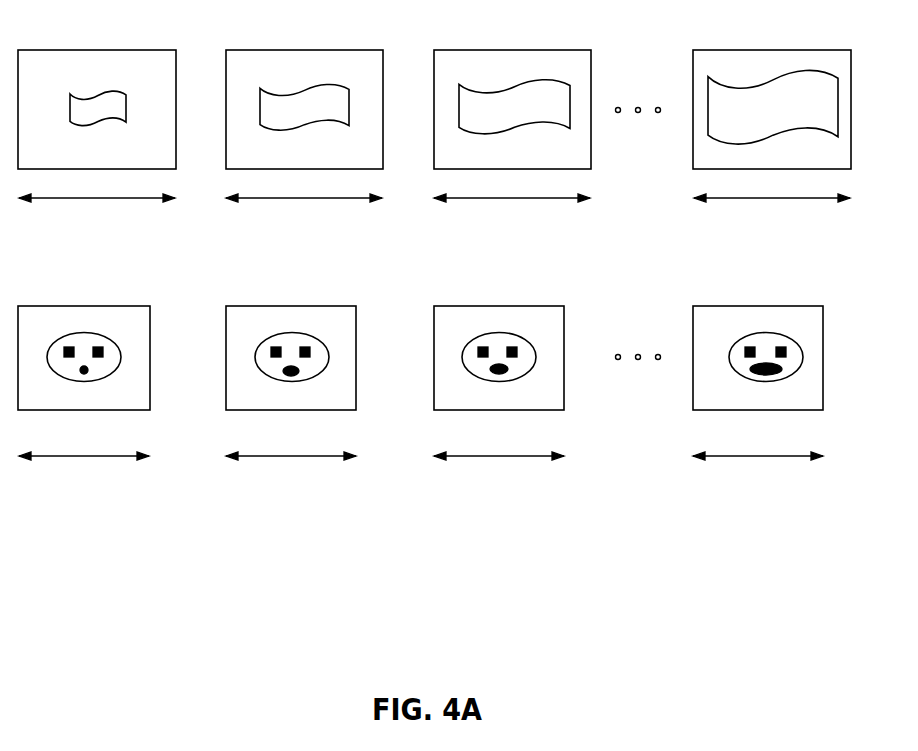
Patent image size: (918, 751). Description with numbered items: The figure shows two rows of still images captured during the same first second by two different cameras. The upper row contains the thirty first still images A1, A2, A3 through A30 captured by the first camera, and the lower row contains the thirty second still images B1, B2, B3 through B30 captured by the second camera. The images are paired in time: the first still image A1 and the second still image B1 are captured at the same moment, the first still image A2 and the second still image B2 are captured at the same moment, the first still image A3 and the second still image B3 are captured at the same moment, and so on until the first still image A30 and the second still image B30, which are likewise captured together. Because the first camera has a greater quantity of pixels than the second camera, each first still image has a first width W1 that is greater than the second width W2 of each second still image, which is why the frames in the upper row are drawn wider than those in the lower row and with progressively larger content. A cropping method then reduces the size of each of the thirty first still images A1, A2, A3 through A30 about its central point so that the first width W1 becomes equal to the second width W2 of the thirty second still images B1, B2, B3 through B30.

The first still image A1 is at (71, 52).
The first still image A2 is at (288, 52).
The first still image A3 is at (488, 52).
The first still image A30 is at (751, 52).
The second still image B1 is at (76, 308).
The second still image B2 is at (293, 308).
The second still image B3 is at (493, 308).
The second still image B30 is at (755, 308).
The first width W1 is at (434, 198).
The second width W2 is at (421, 456).